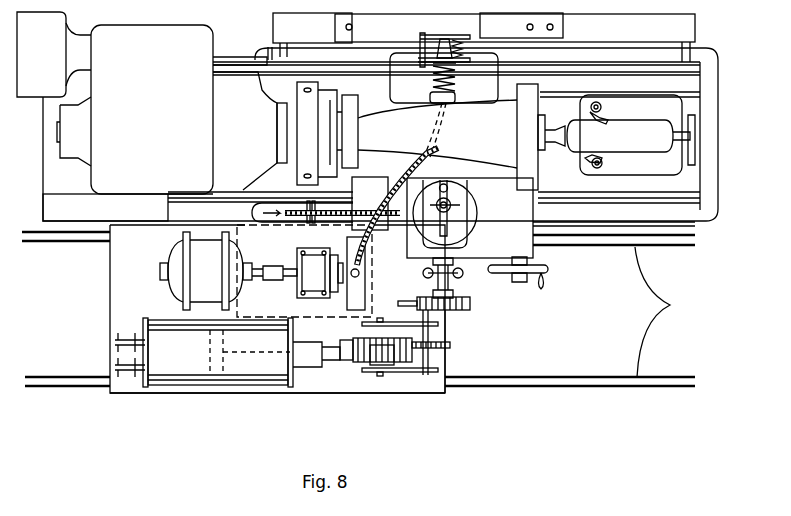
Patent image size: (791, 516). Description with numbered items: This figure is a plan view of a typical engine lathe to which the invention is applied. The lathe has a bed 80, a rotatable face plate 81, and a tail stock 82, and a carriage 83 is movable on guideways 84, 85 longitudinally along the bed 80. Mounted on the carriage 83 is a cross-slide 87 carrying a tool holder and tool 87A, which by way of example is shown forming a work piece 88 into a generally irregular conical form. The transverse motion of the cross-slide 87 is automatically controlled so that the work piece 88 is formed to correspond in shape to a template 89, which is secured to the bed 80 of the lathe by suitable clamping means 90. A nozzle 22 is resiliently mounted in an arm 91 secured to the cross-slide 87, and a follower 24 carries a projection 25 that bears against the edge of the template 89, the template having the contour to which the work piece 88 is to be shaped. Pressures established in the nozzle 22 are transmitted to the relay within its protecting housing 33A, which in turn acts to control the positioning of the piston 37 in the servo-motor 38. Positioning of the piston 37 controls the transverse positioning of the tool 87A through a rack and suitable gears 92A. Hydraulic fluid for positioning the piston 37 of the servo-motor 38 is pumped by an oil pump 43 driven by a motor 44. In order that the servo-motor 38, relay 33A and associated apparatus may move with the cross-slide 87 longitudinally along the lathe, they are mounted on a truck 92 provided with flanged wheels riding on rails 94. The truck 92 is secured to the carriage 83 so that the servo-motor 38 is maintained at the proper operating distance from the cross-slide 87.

The nozzle 22 is at (440, 50).
The follower 24 is at (425, 40).
The projection 25 is at (445, 40).
The relay housing 33A is at (373, 298).
The piston 37 is at (212, 352).
The servo-motor 38 is at (228, 393).
The oil pump 43 is at (297, 262).
The motor 44 is at (168, 258).
The bed 80 is at (718, 210).
The face plate 81 is at (307, 125).
The tail stock 82 is at (622, 116).
The carriage 83 is at (535, 258).
The guideway 84 is at (690, 196).
The guideway 85 is at (696, 85).
The cross-slide 87 is at (442, 217).
The tool 87A is at (445, 226).
The work piece 88 is at (448, 137).
The template 89 is at (565, 34).
The clamping means 90 is at (346, 27).
The arm 91 is at (452, 97).
The truck 92 is at (110, 300).
The gears 92A is at (448, 345).
The rails 94 is at (359, 304).